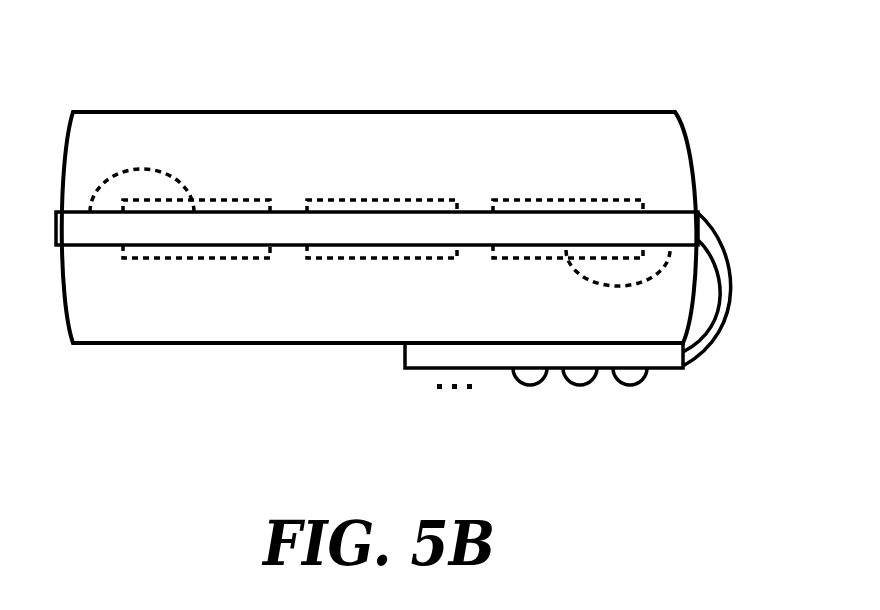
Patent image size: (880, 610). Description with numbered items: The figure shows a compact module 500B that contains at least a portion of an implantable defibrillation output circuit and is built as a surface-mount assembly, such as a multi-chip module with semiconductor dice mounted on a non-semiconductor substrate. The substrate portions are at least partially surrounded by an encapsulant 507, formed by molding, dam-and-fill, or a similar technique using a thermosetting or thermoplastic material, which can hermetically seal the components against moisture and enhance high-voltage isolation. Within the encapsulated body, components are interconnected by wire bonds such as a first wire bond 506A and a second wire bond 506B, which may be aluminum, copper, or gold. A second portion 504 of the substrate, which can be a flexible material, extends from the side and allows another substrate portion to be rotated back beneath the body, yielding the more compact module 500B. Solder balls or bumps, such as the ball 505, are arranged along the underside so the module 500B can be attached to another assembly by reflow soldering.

The module 500B is at (530, 66).
The second portion 504 is at (710, 245).
The first ball 505 is at (632, 385).
The first wire bond 506A is at (142, 169).
The second wire bond 506B is at (583, 277).
The encapsulant 507 is at (343, 112).